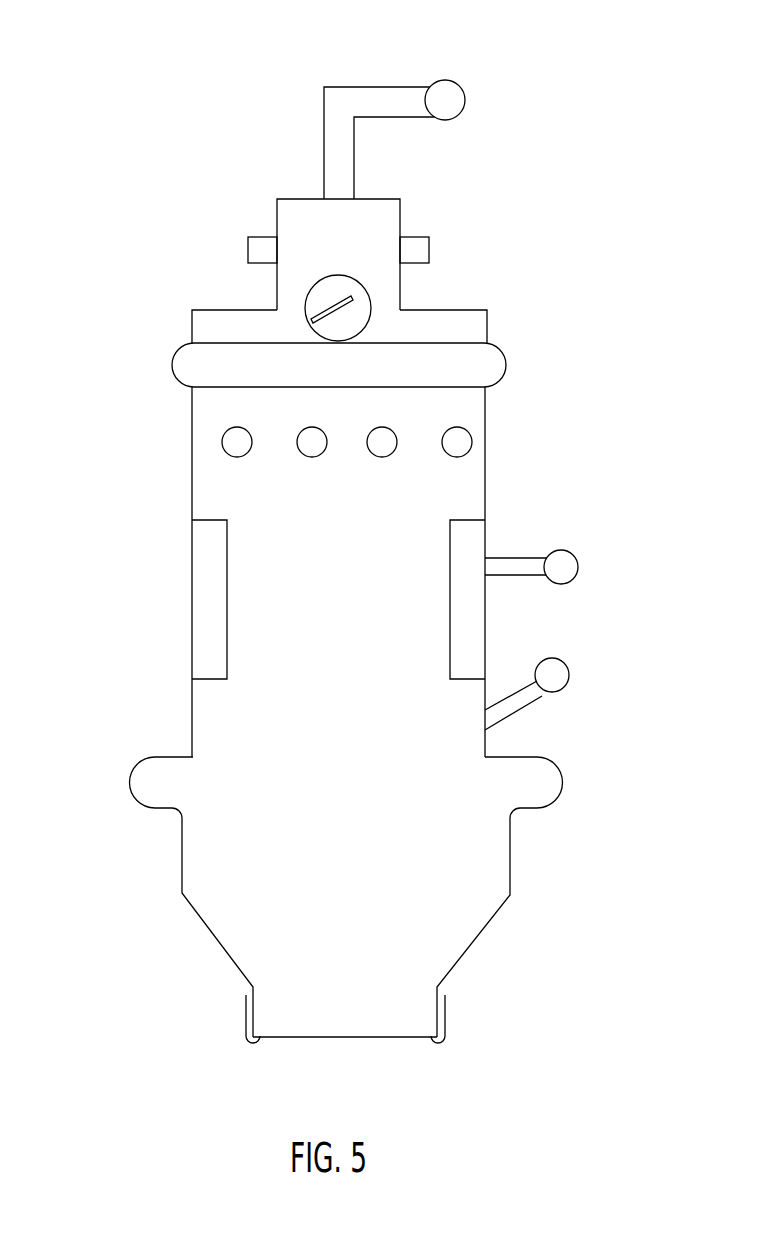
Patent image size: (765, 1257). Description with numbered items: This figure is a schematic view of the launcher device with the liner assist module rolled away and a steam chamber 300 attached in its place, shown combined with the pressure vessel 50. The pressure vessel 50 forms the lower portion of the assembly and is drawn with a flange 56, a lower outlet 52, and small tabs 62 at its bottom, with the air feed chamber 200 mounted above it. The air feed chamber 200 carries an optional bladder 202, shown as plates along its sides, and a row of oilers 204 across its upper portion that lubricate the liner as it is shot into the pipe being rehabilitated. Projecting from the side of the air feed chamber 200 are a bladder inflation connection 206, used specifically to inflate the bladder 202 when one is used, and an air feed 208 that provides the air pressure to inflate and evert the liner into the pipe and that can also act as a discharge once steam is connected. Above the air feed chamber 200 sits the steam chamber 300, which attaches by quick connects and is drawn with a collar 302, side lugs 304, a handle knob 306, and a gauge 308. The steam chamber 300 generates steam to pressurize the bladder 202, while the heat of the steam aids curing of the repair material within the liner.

The pressure vessel 50 is at (510, 895).
The outlet 52 is at (358, 1040).
The flange 56 is at (562, 783).
The tabs 62 is at (252, 1043).
The air feed chamber 200 is at (485, 476).
The bladder 202 is at (200, 594).
The oilers 204 is at (462, 440).
The bladder inflation connection 206 is at (570, 565).
The air feed 208 is at (562, 672).
The steam chamber 300 is at (298, 199).
The collar 302 is at (172, 368).
The lugs 304 is at (248, 254).
The handle knob 306 is at (447, 80).
The gauge 308 is at (371, 309).